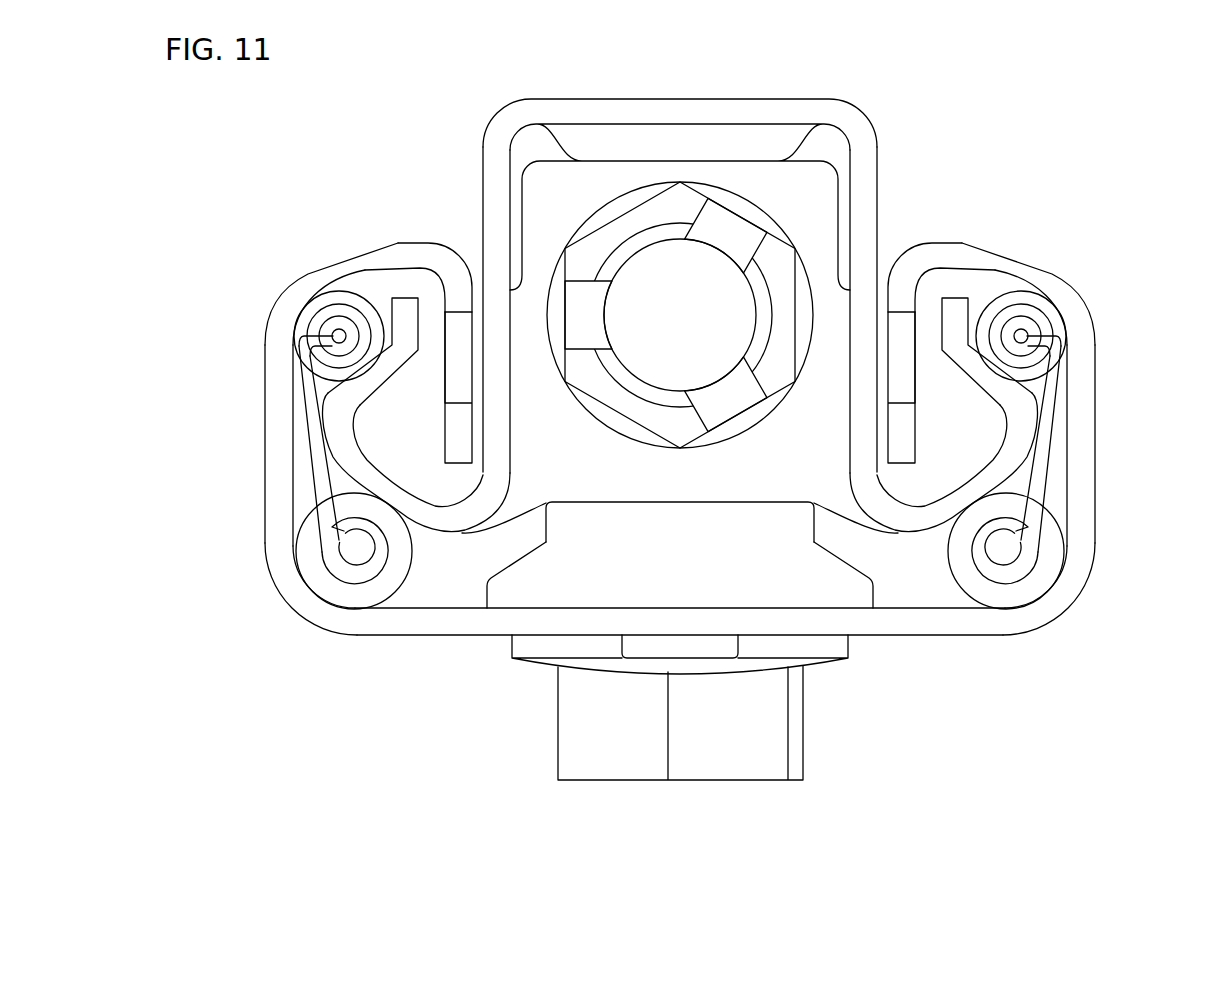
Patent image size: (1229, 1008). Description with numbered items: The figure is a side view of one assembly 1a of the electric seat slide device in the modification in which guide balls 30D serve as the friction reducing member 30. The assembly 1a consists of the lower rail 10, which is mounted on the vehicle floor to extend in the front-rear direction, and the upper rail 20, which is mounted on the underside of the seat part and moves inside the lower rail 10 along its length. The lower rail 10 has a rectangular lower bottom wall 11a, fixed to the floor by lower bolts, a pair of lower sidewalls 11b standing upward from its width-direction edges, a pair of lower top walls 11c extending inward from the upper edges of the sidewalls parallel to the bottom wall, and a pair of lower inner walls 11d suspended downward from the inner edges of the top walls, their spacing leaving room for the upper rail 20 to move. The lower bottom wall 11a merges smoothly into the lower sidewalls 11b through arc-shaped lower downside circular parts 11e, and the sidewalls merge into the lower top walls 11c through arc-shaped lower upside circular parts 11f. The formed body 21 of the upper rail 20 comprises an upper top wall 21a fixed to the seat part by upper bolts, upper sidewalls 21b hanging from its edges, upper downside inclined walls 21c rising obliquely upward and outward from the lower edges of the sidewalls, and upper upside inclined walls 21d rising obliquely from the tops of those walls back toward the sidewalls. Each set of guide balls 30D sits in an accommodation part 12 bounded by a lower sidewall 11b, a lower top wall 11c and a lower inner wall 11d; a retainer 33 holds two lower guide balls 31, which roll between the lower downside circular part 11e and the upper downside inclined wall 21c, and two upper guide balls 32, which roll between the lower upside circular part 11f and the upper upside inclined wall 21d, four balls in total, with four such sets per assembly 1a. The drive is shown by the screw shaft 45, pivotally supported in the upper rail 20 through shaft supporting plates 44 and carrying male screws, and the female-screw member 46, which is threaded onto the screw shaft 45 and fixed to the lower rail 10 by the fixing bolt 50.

The assembly 1a is at (978, 83).
The lower rail 10 is at (1070, 272).
The lower bottom wall 11a is at (665, 610).
The lower sidewalls 11b is at (263, 437).
The lower top walls 11c is at (370, 262).
The lower inner walls 11d is at (459, 442).
The lower downside circular parts 11e is at (293, 609).
The lower upside circular parts 11f is at (288, 293).
The accommodation part 12 is at (399, 410).
The upper rail 20 is at (826, 95).
The bracket body 21 is at (484, 173).
The upper top wall 21a is at (704, 99).
The upper sidewalls 21b is at (867, 160).
The upper downside inclined walls 21c is at (390, 485).
The upper upside inclined walls 21d is at (382, 370).
The friction reducing member 30 is at (678, 460).
The guide balls 30D is at (300, 385).
The lower guide balls 31 is at (363, 594).
The upper guide balls 32 is at (336, 292).
The retainer 33 is at (304, 460).
The shaft supporting plates 44 is at (752, 503).
The screw shaft 45 is at (665, 270).
The female-screw member 46 is at (805, 585).
The fixing bolt 50 is at (562, 725).